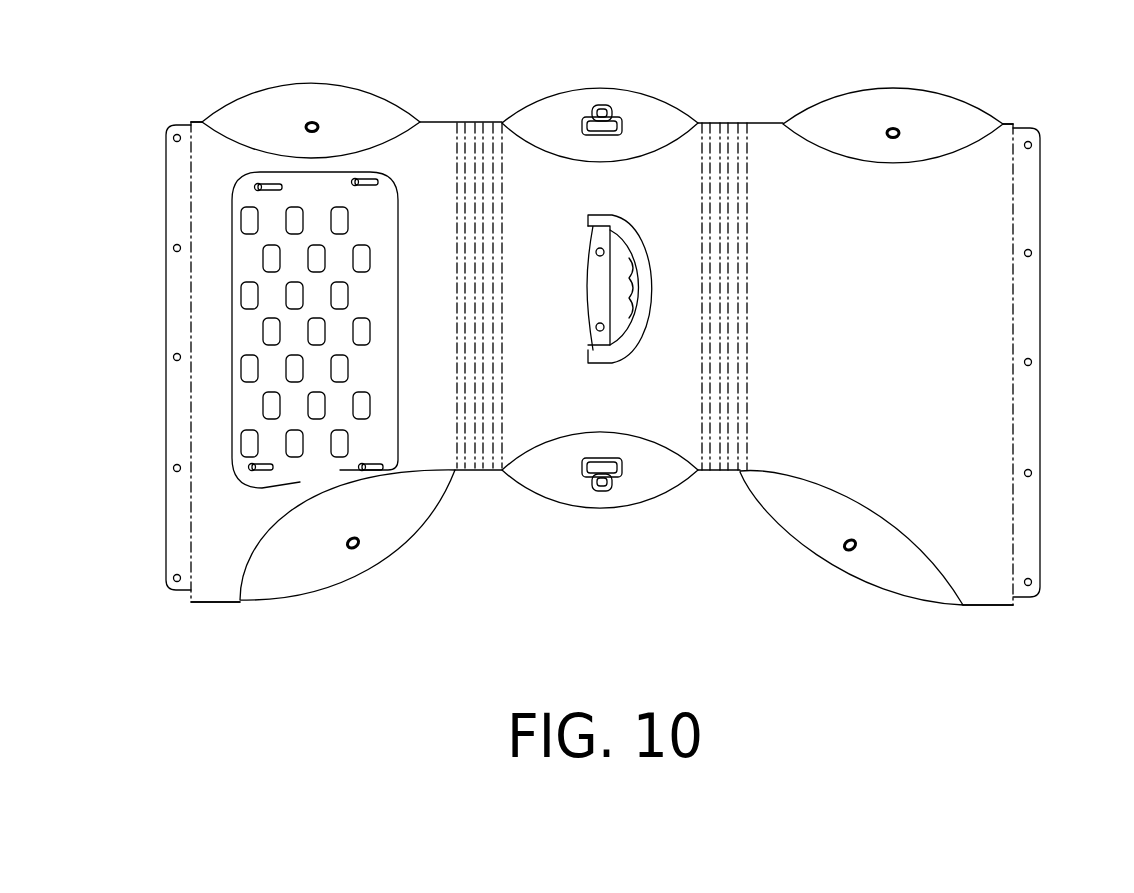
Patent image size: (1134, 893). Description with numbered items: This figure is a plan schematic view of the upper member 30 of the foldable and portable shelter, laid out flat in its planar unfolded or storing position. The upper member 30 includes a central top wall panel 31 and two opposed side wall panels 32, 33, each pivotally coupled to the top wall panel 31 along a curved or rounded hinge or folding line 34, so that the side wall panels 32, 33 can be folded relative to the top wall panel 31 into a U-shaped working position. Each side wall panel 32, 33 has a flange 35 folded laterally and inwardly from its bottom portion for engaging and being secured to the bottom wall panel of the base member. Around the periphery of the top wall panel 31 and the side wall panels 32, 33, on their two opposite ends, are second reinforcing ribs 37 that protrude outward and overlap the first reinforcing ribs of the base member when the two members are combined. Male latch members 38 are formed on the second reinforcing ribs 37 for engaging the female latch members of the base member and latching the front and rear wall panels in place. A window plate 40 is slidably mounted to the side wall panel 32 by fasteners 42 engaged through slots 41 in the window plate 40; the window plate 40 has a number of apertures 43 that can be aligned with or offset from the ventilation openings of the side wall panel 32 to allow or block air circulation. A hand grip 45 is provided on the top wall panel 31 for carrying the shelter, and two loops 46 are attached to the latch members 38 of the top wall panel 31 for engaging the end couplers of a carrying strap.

The upper member 30 is at (457, 123).
The top wall panel 31 is at (523, 167).
The side wall panel 32 is at (215, 588).
The side wall panel 33 is at (980, 587).
The folding line 34 is at (728, 143).
The flange 35 is at (1035, 303).
The second reinforcing ribs 37 is at (425, 497).
The latch members 38 is at (893, 140).
The window plate 40 is at (240, 412).
The slots 41 is at (258, 470).
The fasteners 42 is at (355, 182).
The apertures 43 is at (267, 333).
The hand grip 45 is at (635, 347).
The loops 46 is at (593, 107).